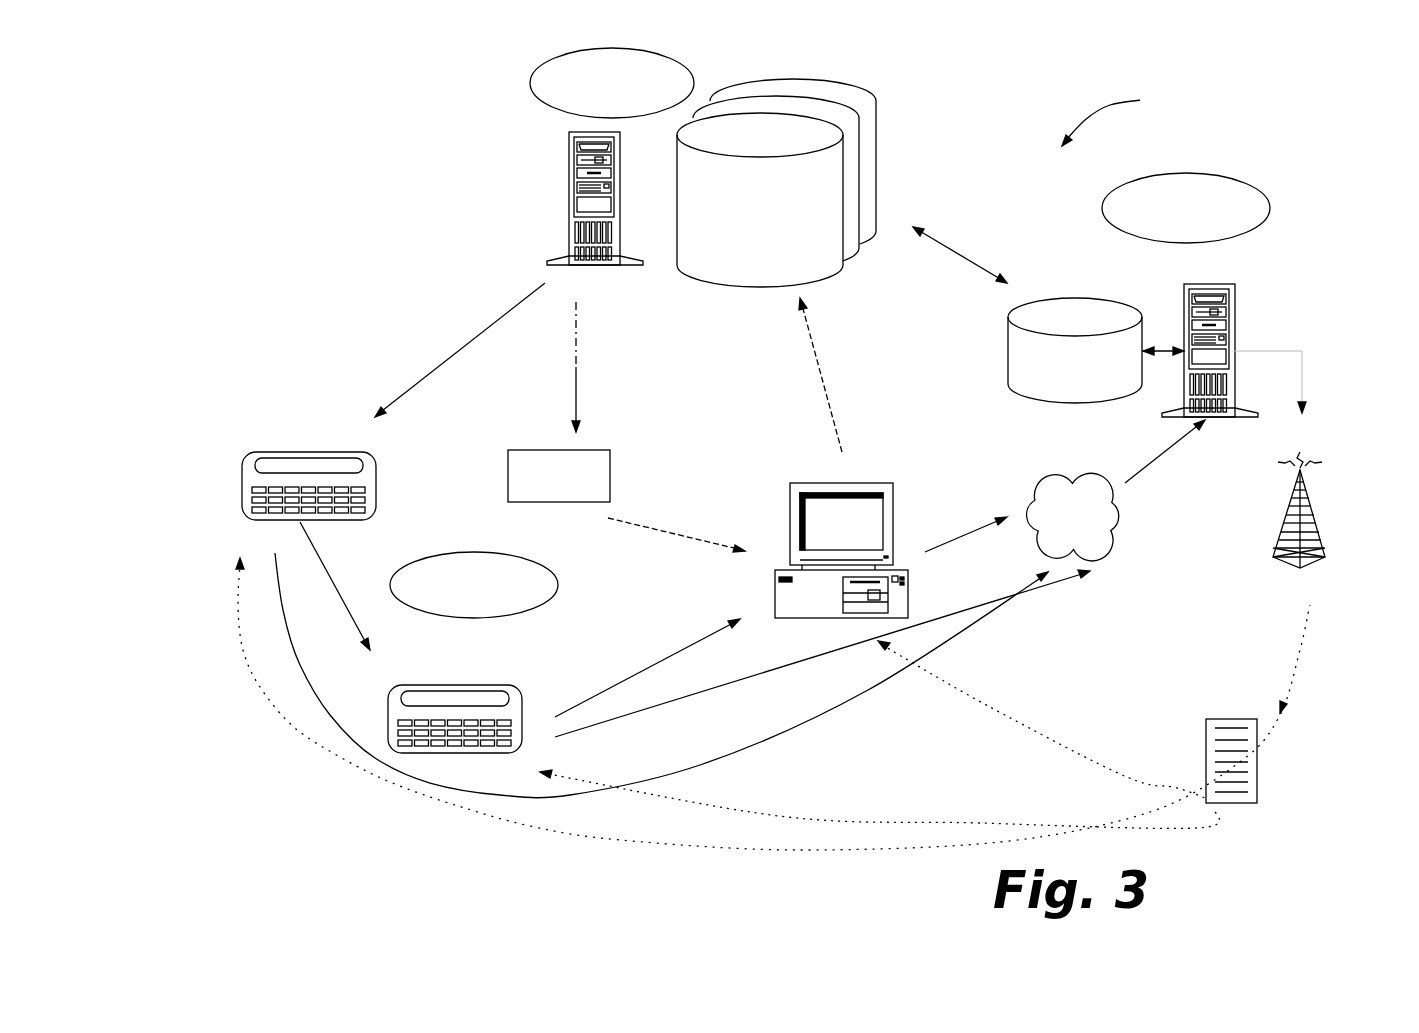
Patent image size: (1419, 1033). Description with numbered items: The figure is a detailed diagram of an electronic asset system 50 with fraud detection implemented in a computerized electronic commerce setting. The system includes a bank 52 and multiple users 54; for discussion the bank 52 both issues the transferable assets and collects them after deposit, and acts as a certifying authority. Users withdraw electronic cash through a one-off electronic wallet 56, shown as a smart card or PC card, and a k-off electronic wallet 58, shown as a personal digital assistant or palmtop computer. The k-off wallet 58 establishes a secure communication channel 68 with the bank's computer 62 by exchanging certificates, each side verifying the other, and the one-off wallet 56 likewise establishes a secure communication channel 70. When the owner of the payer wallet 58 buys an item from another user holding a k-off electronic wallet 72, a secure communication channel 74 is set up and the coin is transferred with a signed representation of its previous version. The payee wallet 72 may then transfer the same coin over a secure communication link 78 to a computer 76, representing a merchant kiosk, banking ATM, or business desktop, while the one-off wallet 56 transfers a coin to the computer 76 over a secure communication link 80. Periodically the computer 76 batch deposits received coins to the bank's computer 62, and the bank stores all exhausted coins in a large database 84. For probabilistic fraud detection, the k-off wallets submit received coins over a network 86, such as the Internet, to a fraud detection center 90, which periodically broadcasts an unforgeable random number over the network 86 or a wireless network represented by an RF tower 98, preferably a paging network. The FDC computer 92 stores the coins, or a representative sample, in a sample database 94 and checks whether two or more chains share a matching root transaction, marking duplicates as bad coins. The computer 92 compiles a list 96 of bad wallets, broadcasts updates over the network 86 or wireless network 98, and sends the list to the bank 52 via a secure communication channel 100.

The electronic asset system 50 is at (1118, 117).
The bank 52 is at (528, 80).
The users 54 is at (473, 618).
The 1-off electronic wallet 56 is at (508, 467).
The k-off electronic wallet 58 is at (310, 452).
The bank's computer 62 is at (568, 195).
The secure communication channel 68 is at (457, 350).
The secure communication channel 70 is at (577, 367).
The k-off electronic wallet 72 is at (500, 685).
The secure communication channel 74 is at (342, 592).
The computer 76 is at (908, 602).
The secure communication link 78 is at (823, 377).
The secure communication link 80 is at (675, 535).
The exhausted coin database 84 is at (835, 198).
The network 86 is at (1145, 515).
The fraud detection center 90 is at (1193, 182).
The FDC computer 92 is at (1207, 287).
The sample database 94 is at (1075, 317).
The list of bad wallets 96 is at (1222, 717).
The RF tower 98 is at (1310, 528).
The secure communication channel 100 is at (962, 255).